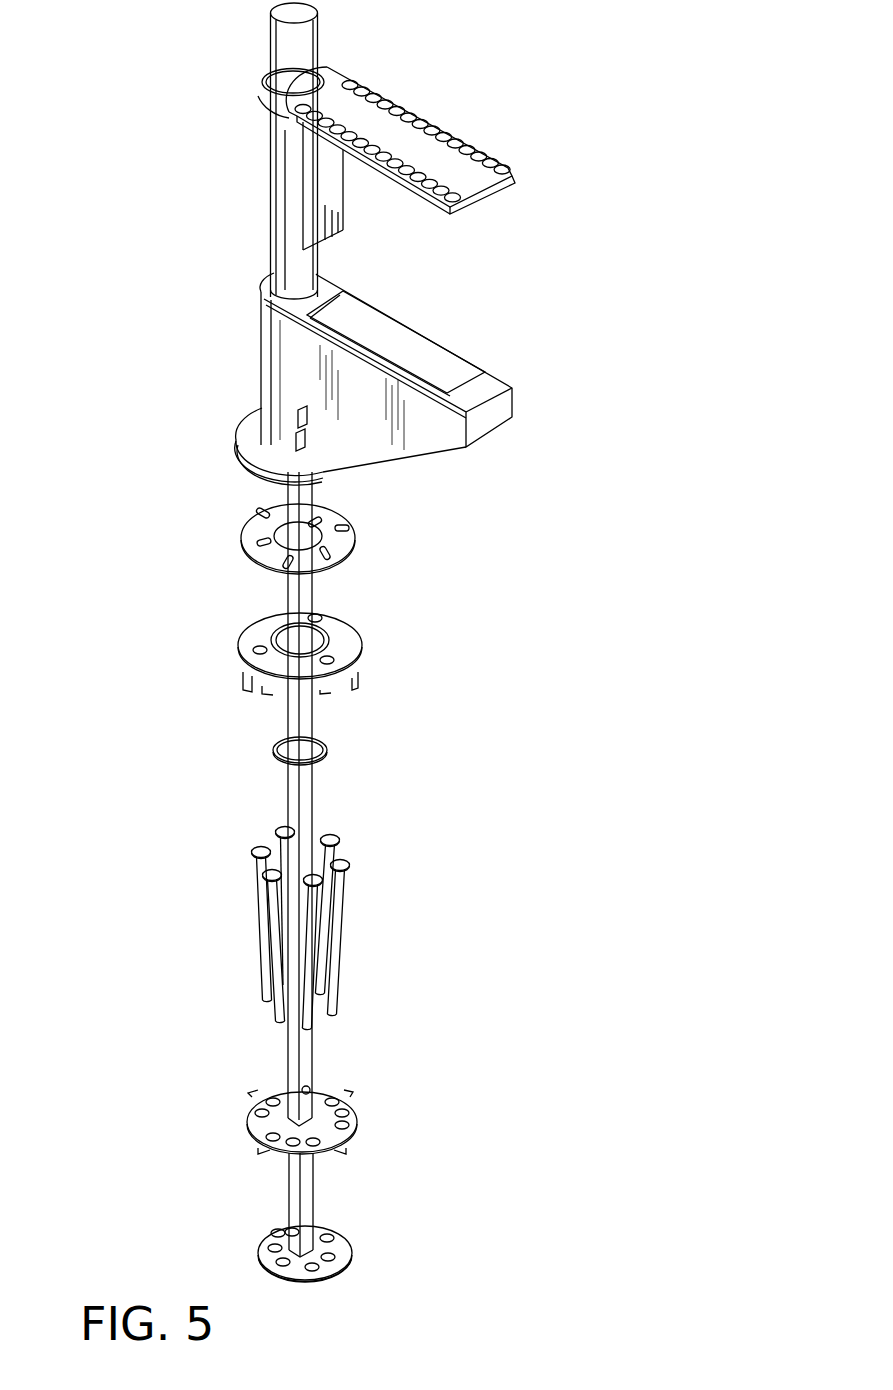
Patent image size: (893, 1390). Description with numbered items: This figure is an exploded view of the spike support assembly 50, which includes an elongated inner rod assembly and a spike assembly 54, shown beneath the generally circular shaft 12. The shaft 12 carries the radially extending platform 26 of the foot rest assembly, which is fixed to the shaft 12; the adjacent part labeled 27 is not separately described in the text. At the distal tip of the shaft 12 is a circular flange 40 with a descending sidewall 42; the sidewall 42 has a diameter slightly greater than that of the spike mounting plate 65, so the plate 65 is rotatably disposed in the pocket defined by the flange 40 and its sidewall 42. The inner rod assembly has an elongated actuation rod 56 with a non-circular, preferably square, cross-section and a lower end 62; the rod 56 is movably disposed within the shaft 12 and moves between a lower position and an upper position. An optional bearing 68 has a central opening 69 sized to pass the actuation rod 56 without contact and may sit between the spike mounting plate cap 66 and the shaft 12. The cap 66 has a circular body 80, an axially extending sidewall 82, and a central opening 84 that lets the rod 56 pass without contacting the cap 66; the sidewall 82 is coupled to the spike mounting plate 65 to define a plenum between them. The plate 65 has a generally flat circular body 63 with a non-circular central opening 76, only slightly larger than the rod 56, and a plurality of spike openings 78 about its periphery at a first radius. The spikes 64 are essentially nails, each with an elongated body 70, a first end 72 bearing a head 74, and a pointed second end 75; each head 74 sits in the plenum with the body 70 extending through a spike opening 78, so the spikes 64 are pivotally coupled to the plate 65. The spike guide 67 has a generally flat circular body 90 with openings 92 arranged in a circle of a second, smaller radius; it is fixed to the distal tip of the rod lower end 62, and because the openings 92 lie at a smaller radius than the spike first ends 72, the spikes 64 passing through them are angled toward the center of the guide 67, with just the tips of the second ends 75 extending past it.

The spike support assembly 50 is at (172, 80).
The spike assembly 54 is at (632, 408).
The shaft 12 is at (278, 212).
The platform 26 is at (425, 348).
The housing front face 27 is at (422, 438).
The circular flange 40 is at (248, 423).
The descending sidewall 42 is at (242, 453).
The actuation rod 56 is at (310, 593).
The bearing 68 is at (253, 558).
The central opening 69 is at (338, 520).
The spike mounting plate cap 66 is at (238, 657).
The central opening 84 is at (325, 637).
The circular body 80 is at (342, 653).
The sidewall 82 is at (350, 677).
The head 74 is at (255, 848).
The first end 72 is at (257, 862).
The body 70 is at (263, 962).
The second end 75 is at (285, 1023).
The spikes 64 is at (350, 870).
The central opening 76 is at (310, 1090).
The circular body 63 is at (255, 1130).
The spike openings 78 is at (270, 1095).
The spike mounting plate 65 is at (358, 1125).
The lower end 62 is at (332, 1212).
The circular body 90 is at (270, 1228).
The openings 92 is at (340, 1257).
The spike guide 67 is at (332, 1278).